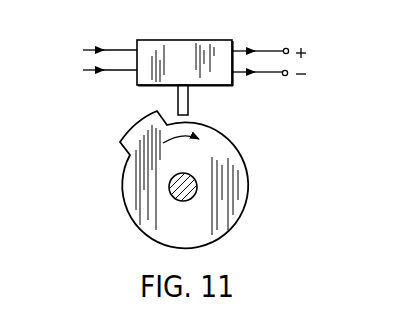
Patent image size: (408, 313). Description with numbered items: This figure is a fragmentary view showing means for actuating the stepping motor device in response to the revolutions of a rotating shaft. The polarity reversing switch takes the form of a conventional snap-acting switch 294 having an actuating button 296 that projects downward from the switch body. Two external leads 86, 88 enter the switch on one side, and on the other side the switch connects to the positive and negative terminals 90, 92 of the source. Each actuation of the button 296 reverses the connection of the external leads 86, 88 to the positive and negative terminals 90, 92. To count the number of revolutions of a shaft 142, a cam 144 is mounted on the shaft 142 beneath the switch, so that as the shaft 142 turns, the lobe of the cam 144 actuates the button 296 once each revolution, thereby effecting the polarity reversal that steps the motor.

The external lead 86 is at (88, 48).
The external lead 88 is at (90, 71).
The positive terminal 90 is at (288, 47).
The negative terminal 92 is at (287, 77).
The snap-acting switch 294 is at (180, 40).
The actuating button 296 is at (189, 108).
The cam 144 is at (132, 185).
The shaft 142 is at (197, 193).